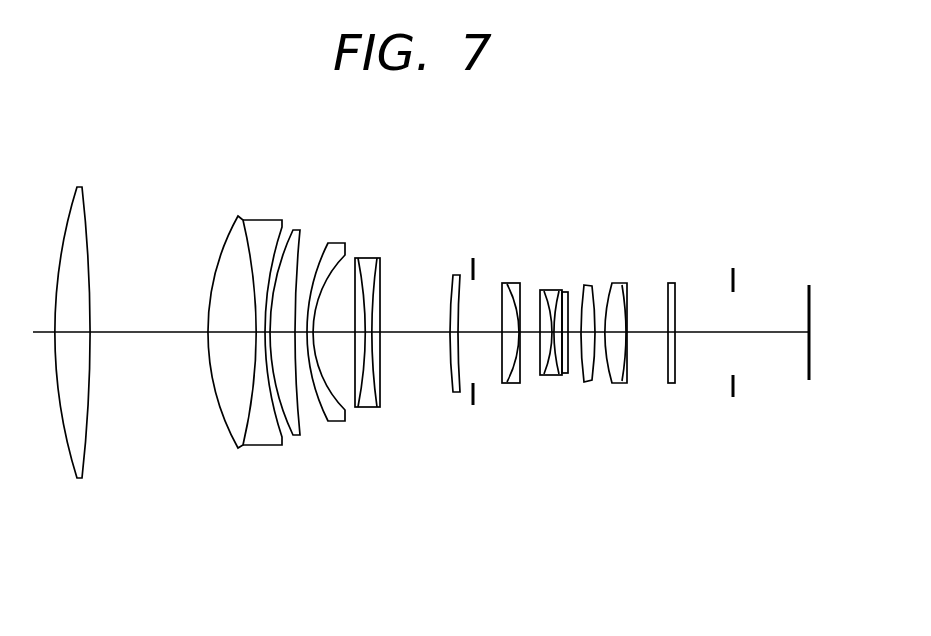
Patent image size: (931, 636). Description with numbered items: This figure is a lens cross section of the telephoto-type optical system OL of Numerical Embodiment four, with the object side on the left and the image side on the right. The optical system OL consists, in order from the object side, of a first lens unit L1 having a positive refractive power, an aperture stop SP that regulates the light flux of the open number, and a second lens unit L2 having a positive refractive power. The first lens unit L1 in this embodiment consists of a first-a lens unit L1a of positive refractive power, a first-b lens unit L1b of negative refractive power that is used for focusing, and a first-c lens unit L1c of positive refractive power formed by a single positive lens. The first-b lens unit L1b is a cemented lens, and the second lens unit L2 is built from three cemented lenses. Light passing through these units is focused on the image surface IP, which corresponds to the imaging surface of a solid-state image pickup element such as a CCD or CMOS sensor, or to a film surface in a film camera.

The optical system OL is at (647, 170).
The first lens unit L1 is at (478, 557).
The first-a lens unit L1a is at (52, 488).
The first-b lens unit L1b is at (397, 488).
The first-c lens unit L1c is at (470, 488).
The aperture stop SP is at (479, 247).
The second lens unit L2 is at (620, 557).
The image surface IP is at (808, 363).